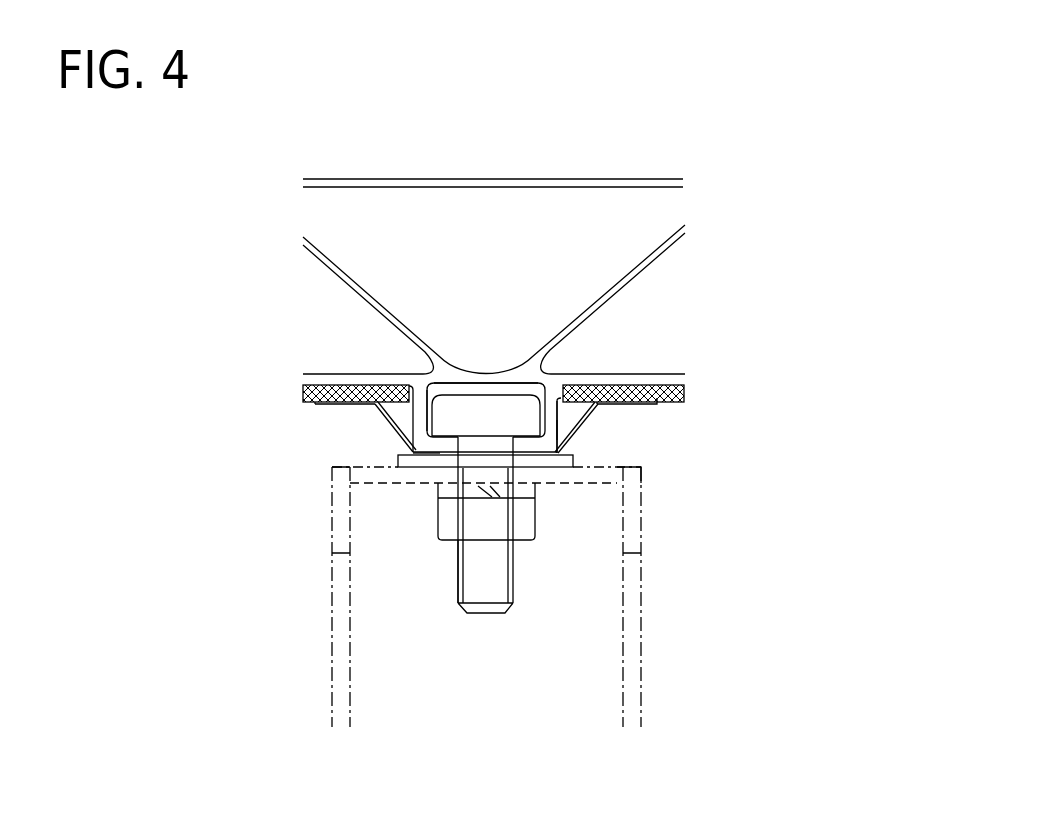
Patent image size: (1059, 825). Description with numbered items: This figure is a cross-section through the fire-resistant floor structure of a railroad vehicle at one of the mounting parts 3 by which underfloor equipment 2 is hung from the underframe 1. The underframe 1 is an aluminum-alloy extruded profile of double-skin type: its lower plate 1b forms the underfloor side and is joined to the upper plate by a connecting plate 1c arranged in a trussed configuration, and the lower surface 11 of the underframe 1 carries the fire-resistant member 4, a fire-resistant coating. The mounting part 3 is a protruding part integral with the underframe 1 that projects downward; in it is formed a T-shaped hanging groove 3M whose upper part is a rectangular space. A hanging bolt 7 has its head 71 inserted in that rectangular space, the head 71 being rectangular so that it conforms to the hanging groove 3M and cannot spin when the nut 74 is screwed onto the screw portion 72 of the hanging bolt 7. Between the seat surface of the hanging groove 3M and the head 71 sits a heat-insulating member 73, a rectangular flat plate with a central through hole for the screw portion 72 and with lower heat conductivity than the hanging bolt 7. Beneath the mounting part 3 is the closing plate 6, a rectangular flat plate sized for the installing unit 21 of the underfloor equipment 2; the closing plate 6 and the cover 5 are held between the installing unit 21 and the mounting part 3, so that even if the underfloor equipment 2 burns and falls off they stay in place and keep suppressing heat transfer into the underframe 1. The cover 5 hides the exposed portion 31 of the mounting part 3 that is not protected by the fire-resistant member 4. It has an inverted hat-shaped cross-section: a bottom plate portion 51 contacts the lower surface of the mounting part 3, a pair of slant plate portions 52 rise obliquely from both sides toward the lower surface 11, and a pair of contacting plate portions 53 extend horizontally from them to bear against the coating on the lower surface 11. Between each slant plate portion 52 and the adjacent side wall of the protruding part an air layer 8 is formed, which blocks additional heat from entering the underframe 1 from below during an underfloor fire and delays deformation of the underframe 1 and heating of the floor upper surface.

The underframe 1 is at (613, 177).
The connecting plate 1c is at (674, 241).
The lower plate 1b is at (666, 373).
The fire-resistant member 4 is at (685, 393).
The lower surface 11 is at (650, 405).
The cover 5 is at (592, 421).
The air layer 8 is at (575, 410).
The contacting plate portion 53 is at (373, 403).
The slant plate portion 52 is at (390, 421).
The bottom plate portion 51 is at (422, 458).
The closing plate 6 is at (397, 456).
The hanging bolt 7 is at (504, 386).
The head 71 is at (460, 404).
The heat-insulating member 73 is at (427, 392).
The hanging groove 3M is at (477, 403).
The mounting part 3 is at (541, 440).
The screw portion 72 is at (458, 578).
The nut 74 is at (450, 518).
The underfloor equipment 2 is at (646, 594).
The installing unit 21 is at (621, 467).
The exposed portion 31 is at (567, 413).